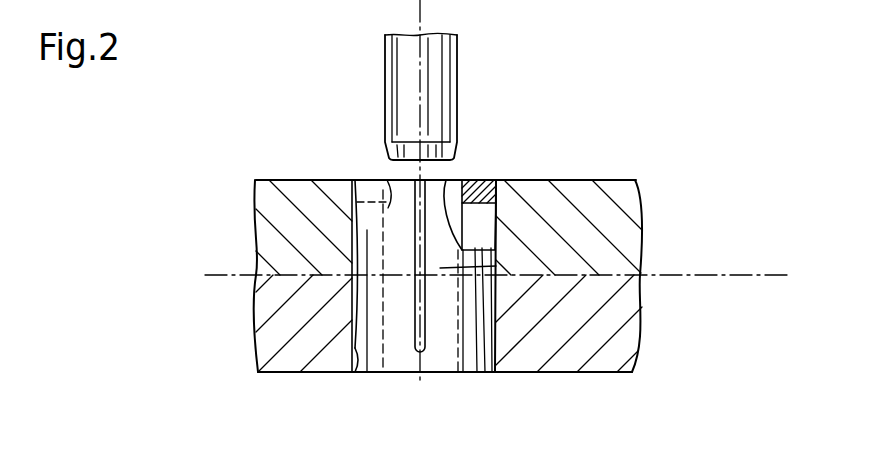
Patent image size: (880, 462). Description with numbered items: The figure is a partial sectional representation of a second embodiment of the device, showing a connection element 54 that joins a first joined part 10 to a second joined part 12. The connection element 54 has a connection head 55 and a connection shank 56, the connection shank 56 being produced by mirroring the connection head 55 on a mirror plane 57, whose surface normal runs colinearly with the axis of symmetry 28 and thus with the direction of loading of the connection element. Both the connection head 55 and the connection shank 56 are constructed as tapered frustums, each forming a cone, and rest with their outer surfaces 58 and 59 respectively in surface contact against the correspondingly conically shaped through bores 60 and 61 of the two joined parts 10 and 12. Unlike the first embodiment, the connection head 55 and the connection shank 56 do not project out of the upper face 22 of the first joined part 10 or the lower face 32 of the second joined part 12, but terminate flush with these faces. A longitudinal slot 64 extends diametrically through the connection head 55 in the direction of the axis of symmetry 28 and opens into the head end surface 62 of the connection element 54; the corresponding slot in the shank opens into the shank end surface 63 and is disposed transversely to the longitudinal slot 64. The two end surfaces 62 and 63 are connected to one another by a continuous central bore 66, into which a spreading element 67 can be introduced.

The first joined part 10 is at (623, 248).
The second joined part 12 is at (620, 336).
The upper face of the first joined part 22 is at (618, 180).
The axis of symmetry 28 is at (422, 48).
The lower face of the second joined part 32 is at (592, 373).
The connection element 54 is at (358, 165).
The connection head 55 is at (478, 180).
The connection shank 56 is at (470, 360).
The mirror plane 57 is at (733, 273).
The outer surface of the connection head 58 is at (496, 217).
The outer surface of the connection shank 59 is at (503, 318).
The through bore of the first joined part 60 is at (343, 182).
The through bore of the second joined part 61 is at (355, 370).
The head end surface 62 is at (446, 180).
The shank end surface 63 is at (397, 373).
The longitudinal slot 64 is at (440, 268).
The central bore 66 is at (387, 178).
The spreading element 67 is at (435, 100).